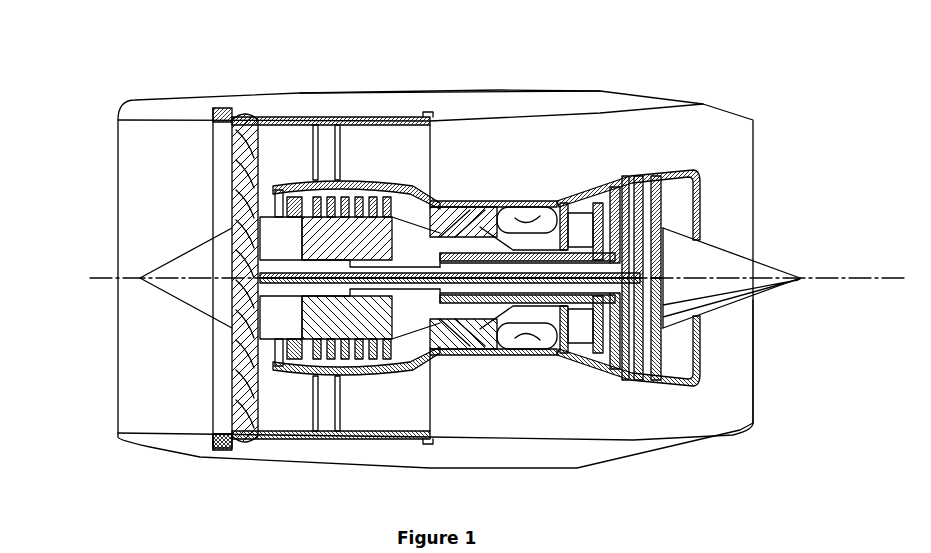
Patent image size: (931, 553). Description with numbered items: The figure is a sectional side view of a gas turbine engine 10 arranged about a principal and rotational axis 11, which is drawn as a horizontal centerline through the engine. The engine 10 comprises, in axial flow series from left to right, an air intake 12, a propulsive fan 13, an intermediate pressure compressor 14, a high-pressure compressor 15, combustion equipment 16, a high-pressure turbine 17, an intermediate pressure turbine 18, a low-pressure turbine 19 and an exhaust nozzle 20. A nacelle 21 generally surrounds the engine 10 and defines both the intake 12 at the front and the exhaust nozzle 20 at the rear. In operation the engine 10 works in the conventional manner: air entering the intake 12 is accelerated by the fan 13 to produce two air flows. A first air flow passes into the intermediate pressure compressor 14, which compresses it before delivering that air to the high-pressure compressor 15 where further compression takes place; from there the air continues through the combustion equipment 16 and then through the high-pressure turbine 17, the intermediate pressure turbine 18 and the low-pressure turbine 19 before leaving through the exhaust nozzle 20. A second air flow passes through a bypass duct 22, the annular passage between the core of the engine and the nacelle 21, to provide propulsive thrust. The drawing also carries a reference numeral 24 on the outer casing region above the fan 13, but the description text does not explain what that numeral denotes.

The gas turbine engine 10 is at (110, 150).
The principal and rotational axis 11 is at (110, 277).
The air intake 12 is at (193, 122).
The propulsive fan 13 is at (230, 393).
The intermediate pressure compressor 14 is at (350, 362).
The high-pressure compressor 15 is at (456, 213).
The combustion equipment 16 is at (493, 363).
The high-pressure turbine 17 is at (547, 362).
The intermediate pressure turbine 18 is at (585, 198).
The low-pressure turbine 19 is at (600, 377).
The exhaust nozzle 20 is at (755, 408).
The nacelle 21 is at (492, 112).
The bypass duct 22 is at (403, 163).
The fan casing 24 is at (287, 125).